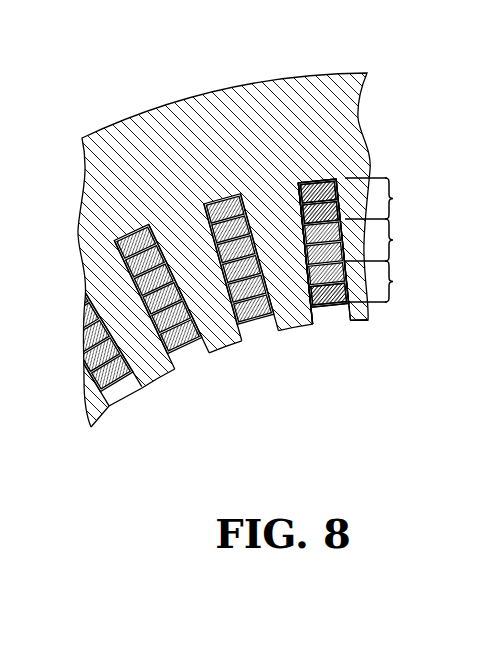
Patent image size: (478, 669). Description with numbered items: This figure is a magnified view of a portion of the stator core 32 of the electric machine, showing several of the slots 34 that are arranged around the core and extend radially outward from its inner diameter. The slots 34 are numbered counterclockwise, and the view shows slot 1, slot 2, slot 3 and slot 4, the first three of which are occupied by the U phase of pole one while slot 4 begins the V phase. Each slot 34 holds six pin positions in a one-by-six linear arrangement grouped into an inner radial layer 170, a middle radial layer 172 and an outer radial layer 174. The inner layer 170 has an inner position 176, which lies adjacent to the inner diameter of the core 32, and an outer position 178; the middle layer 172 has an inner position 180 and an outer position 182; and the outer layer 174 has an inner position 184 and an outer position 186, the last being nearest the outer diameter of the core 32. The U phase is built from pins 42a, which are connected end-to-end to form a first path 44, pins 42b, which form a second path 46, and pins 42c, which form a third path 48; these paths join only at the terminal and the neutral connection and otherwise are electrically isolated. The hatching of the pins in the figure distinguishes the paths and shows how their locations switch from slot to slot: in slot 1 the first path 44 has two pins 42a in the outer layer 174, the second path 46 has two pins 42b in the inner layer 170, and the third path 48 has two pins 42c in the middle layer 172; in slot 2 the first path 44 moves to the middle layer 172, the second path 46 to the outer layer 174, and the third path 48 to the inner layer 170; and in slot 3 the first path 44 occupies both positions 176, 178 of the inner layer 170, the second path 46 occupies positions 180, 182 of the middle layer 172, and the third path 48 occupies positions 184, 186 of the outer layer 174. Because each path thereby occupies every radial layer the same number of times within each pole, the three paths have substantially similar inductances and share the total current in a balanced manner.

The stator core 32 is at (118, 158).
The slots 34 is at (358, 345).
The pins 42a is at (235, 247).
The pins 42b is at (228, 203).
The pins 42c is at (316, 214).
The first path 44 is at (180, 345).
The second path 46 is at (170, 277).
The third path 48 is at (137, 230).
The inner radial layer 170 is at (393, 282).
The middle radial layer 172 is at (393, 240).
The outer radial layer 174 is at (393, 198).
The inner position 176 is at (350, 324).
The outer position 178 is at (304, 314).
The inner position 180 is at (295, 328).
The outer position 182 is at (296, 228).
The inner position 184 is at (300, 232).
The outer position 186 is at (330, 178).
The slot 1 is at (324, 269).
The slot 2 is at (241, 284).
The slot 3 is at (162, 311).
The slot 4 is at (93, 346).